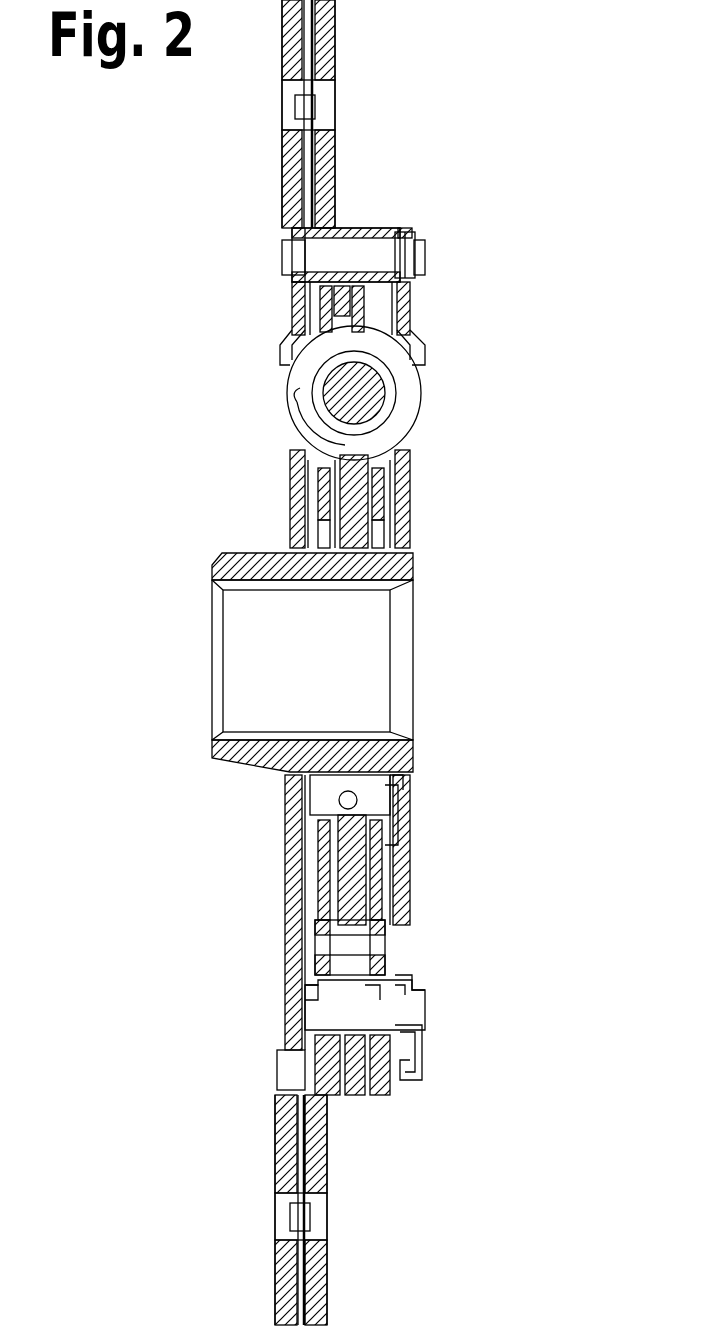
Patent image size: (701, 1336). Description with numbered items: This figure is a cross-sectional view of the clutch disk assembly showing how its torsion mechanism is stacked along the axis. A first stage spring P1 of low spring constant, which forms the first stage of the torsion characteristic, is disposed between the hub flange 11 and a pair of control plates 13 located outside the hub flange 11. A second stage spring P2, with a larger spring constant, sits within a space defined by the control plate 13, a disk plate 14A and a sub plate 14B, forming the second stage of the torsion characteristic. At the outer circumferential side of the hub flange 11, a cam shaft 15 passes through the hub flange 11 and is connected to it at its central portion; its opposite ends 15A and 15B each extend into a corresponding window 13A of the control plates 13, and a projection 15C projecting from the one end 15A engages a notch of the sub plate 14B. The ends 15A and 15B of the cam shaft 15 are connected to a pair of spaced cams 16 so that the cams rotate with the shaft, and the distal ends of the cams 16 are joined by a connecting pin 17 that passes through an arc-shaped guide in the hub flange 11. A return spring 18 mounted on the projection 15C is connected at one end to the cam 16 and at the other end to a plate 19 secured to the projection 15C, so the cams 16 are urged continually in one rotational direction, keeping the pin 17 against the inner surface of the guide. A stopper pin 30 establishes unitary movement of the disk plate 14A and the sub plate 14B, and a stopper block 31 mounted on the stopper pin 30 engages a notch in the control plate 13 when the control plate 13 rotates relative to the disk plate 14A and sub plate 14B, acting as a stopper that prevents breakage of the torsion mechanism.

The stopper pin 30 is at (343, 255).
The stopper block 31 is at (380, 235).
The second stage spring P2 is at (395, 385).
The hub flange 11 is at (360, 455).
The control plate 13 is at (382, 502).
The disk plate 14A is at (292, 525).
The sub plate 14B is at (405, 535).
The first stage spring P1 is at (405, 762).
The connecting pin 17 is at (352, 940).
The cam 16 is at (312, 960).
The cam shaft 15 is at (300, 1005).
The one end of cam shaft 15A is at (405, 965).
The other end of cam shaft 15B is at (307, 985).
The projection 15C is at (372, 993).
The plate 19 is at (420, 1040).
The return spring 18 is at (415, 1070).
The window 13A is at (385, 1065).